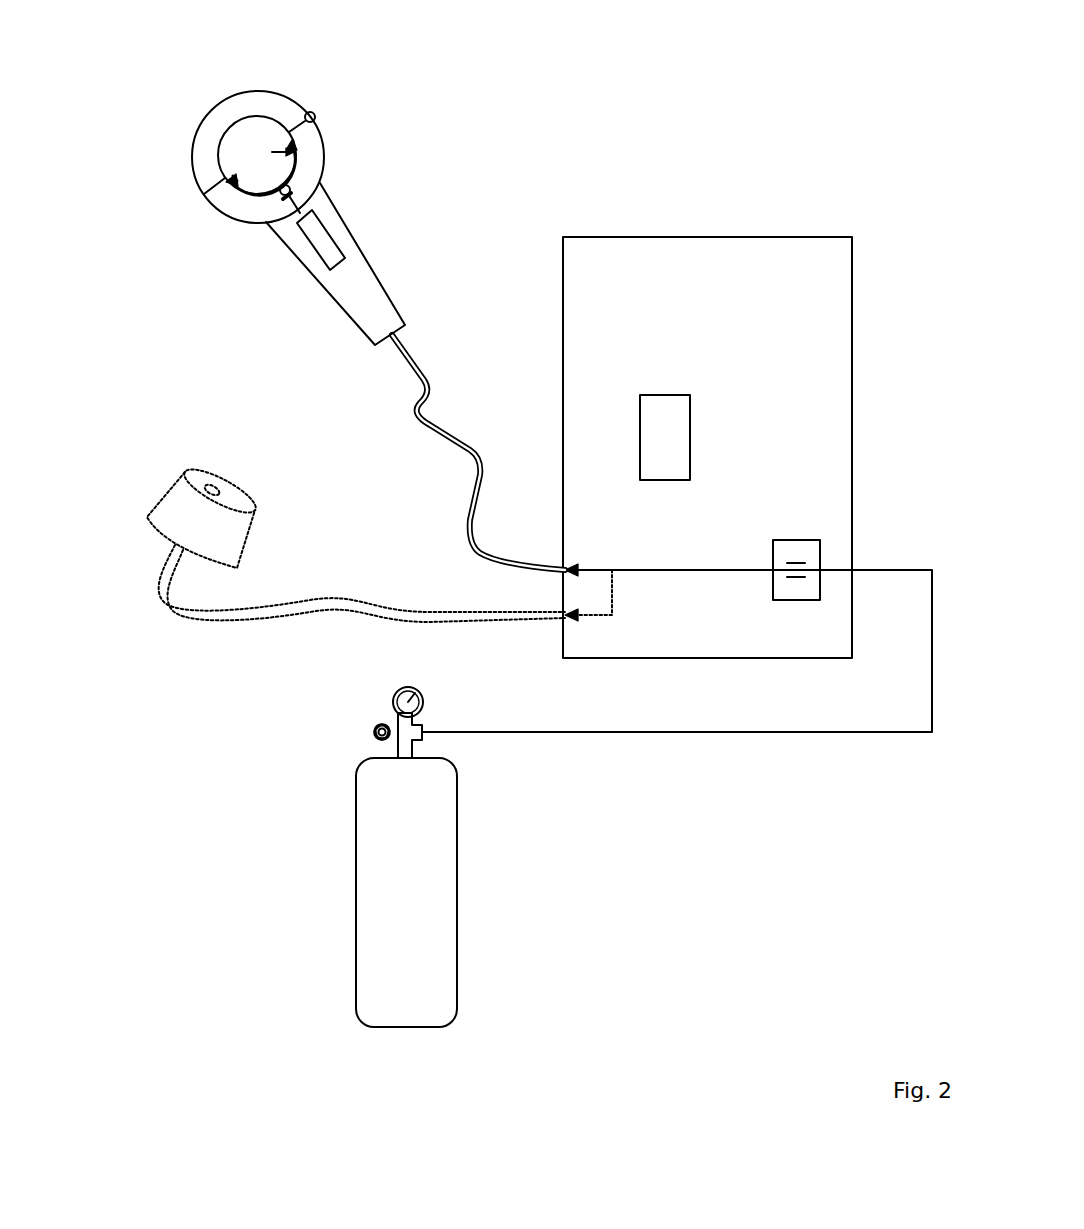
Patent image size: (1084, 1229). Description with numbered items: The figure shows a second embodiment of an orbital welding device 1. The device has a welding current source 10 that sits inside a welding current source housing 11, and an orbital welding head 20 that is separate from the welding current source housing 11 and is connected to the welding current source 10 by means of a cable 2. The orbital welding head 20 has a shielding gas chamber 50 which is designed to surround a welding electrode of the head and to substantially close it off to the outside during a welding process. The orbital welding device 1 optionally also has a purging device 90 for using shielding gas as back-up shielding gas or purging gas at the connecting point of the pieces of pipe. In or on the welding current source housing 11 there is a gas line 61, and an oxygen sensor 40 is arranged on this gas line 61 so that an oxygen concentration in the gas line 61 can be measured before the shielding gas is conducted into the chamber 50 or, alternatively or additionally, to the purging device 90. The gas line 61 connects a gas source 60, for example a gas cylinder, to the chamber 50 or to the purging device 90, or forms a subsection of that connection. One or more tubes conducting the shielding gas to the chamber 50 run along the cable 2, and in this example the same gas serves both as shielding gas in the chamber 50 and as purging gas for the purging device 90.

The orbital welding device 1 is at (830, 163).
The cable 2 is at (413, 417).
The welding current source 10 is at (667, 395).
The welding current source housing 11 is at (620, 237).
The orbital welding head 20 is at (264, 262).
The oxygen sensor 40 is at (793, 540).
The shielding gas chamber 50 is at (242, 140).
The gas source 60 is at (430, 840).
The gas line 61 is at (780, 568).
The purging device 90 is at (167, 493).